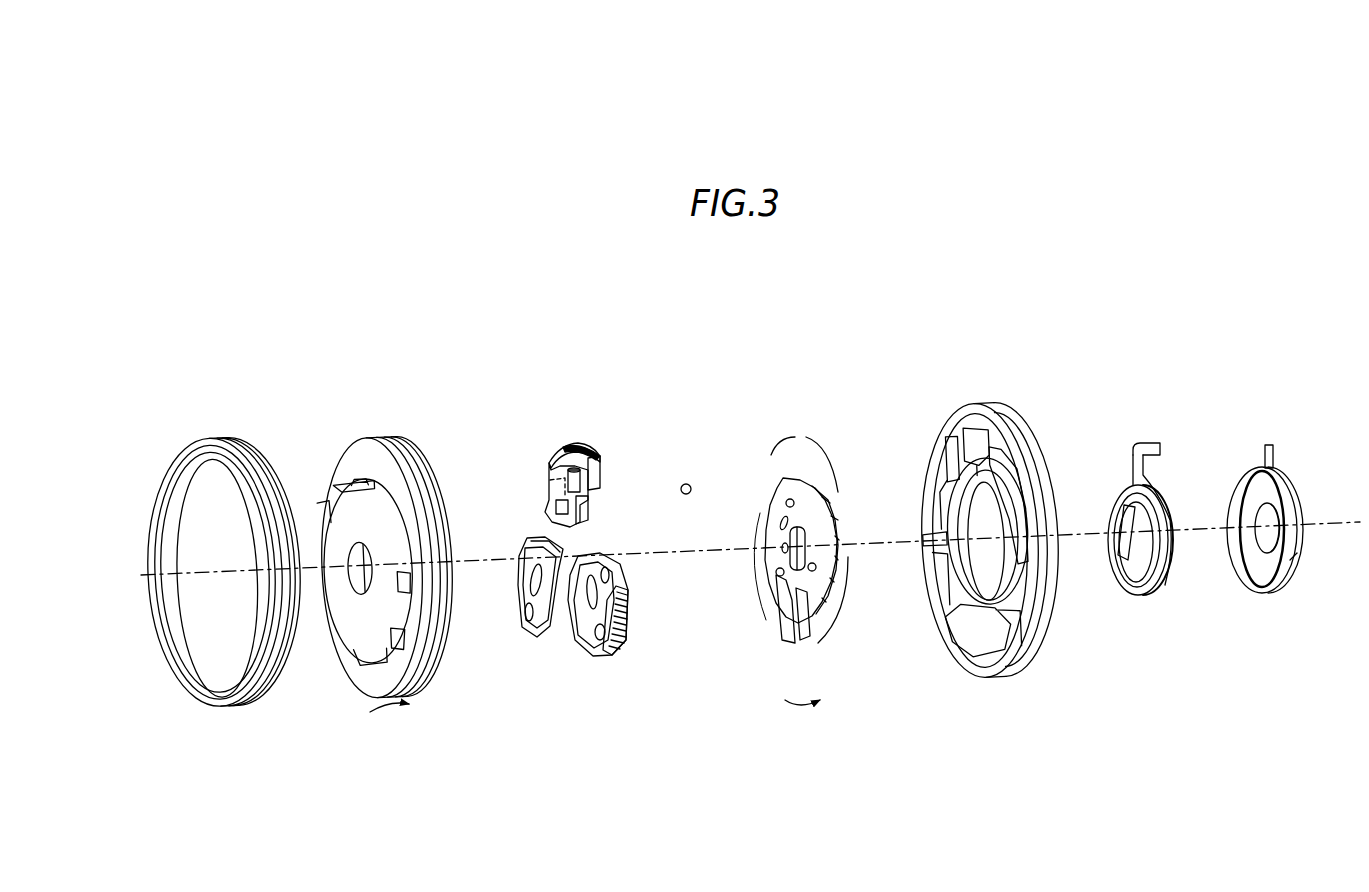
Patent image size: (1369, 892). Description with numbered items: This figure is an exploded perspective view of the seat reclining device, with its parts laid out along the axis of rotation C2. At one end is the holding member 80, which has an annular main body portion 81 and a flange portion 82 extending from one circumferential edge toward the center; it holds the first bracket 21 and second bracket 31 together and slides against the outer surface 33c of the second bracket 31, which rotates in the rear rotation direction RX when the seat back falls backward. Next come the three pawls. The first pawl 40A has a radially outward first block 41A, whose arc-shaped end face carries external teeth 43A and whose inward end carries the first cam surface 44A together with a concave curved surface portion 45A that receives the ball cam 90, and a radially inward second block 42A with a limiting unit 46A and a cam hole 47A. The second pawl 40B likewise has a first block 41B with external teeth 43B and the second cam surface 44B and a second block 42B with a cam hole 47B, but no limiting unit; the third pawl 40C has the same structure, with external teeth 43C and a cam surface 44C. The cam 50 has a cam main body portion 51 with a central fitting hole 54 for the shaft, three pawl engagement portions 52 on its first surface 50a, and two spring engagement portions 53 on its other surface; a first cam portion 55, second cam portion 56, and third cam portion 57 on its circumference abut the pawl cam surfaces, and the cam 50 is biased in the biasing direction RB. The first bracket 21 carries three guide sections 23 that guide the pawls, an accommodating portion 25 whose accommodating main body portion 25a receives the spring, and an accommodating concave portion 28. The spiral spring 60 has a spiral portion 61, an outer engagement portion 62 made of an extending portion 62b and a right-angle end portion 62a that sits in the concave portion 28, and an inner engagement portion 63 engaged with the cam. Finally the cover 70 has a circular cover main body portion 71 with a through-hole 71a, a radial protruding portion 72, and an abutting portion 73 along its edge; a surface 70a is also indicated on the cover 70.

The holding member 80 is at (224, 539).
The main body portion 81 is at (259, 704).
The flange portion 82 is at (194, 690).
The second bracket 31 is at (385, 534).
The outer surface 33c is at (360, 682).
The rear rotation direction RX is at (389, 726).
The first pawl 40A is at (567, 428).
The first block 41A is at (553, 452).
The second block 42A is at (583, 503).
The external teeth 43A is at (567, 442).
The first cam surface 44A is at (546, 482).
The concave curved surface portion 45A is at (583, 474).
The limiting unit 46A is at (589, 452).
The cam hole 47A is at (551, 503).
The ball cam 90 is at (687, 484).
The third pawl 40C is at (513, 643).
The external teeth 43C is at (524, 596).
The third cam surface 44C is at (563, 605).
The second pawl 40B is at (612, 640).
The first block 41B is at (578, 614).
The second block 42B is at (572, 612).
The external teeth 43B is at (618, 614).
The second cam surface 44B is at (596, 543).
The cam hole 47B is at (587, 558).
The cam 50 is at (795, 514).
The first surface 50a is at (777, 600).
The cam main body portion 51 is at (815, 518).
The pawl engagement portion 52 is at (782, 490).
The spring engagement portion 53 is at (780, 547).
The fitting hole 54 is at (803, 532).
The first cam portion 55 is at (804, 451).
The second cam portion 56 is at (844, 600).
The third cam portion 57 is at (752, 570).
The biasing direction RB is at (802, 724).
The first bracket 21 is at (976, 516).
The guide section 23 is at (937, 473).
The accommodating portion 25 is at (1002, 583).
The accommodating main body portion 25a is at (967, 567).
The accommodating concave portion 28 is at (988, 437).
The spiral spring 60 is at (1159, 467).
The spiral portion 61 is at (1158, 578).
The outer engagement portion 62 is at (1176, 475).
The end portion 62a is at (1152, 442).
The extending portion 62b is at (1147, 465).
The inner engagement portion 63 is at (1115, 517).
The cover 70 is at (1285, 480).
The disc surface 70a is at (1297, 553).
The cover main body portion 71 is at (1257, 572).
The through-hole 71a is at (1263, 503).
The protruding portion 72 is at (1273, 453).
The abutting portion 73 is at (1280, 580).
The axis of rotation C2 is at (1337, 523).